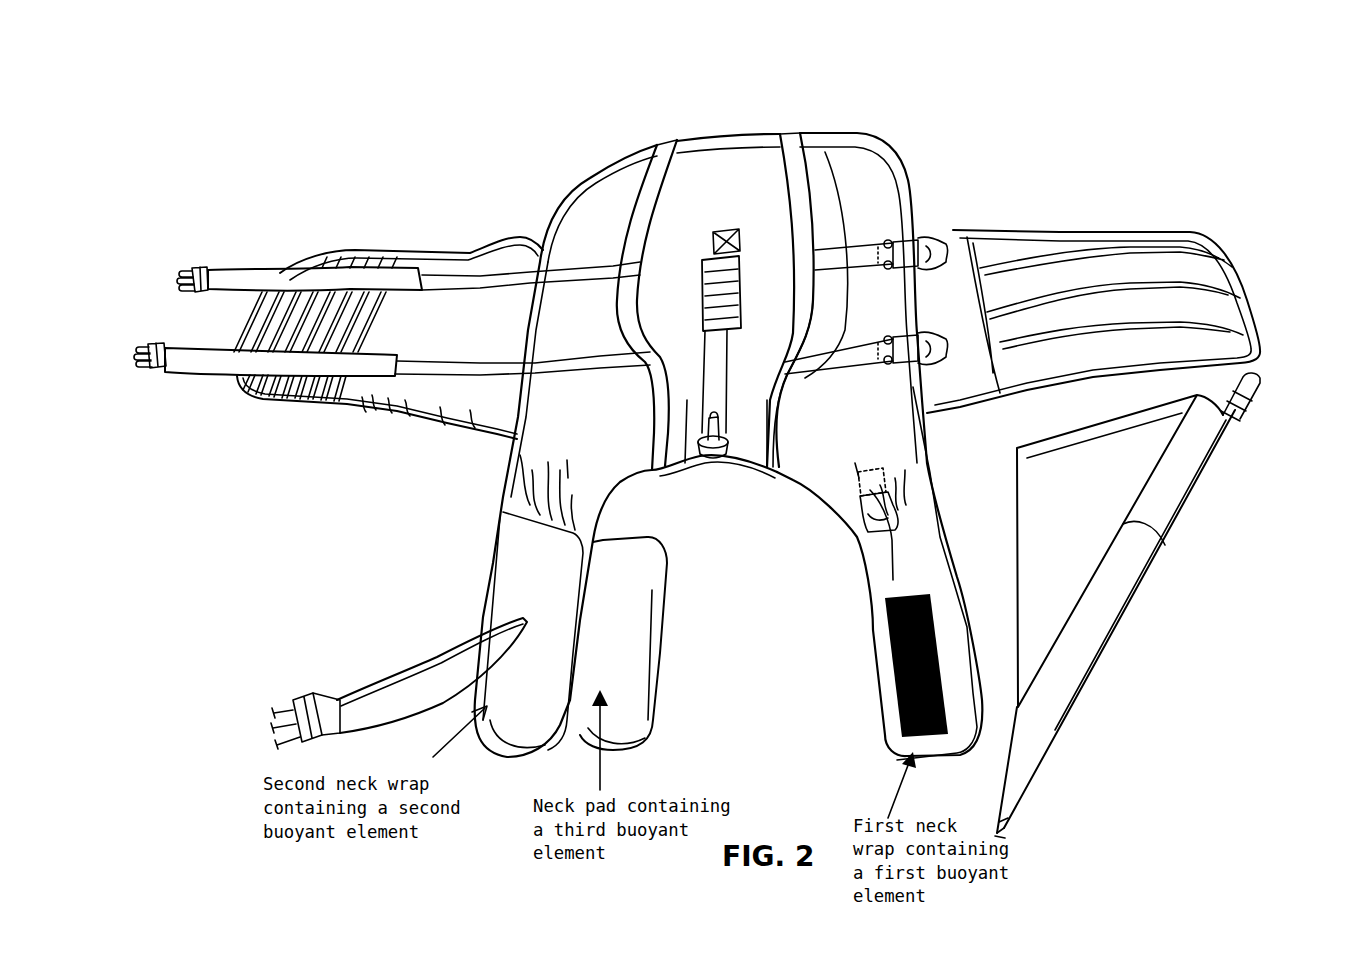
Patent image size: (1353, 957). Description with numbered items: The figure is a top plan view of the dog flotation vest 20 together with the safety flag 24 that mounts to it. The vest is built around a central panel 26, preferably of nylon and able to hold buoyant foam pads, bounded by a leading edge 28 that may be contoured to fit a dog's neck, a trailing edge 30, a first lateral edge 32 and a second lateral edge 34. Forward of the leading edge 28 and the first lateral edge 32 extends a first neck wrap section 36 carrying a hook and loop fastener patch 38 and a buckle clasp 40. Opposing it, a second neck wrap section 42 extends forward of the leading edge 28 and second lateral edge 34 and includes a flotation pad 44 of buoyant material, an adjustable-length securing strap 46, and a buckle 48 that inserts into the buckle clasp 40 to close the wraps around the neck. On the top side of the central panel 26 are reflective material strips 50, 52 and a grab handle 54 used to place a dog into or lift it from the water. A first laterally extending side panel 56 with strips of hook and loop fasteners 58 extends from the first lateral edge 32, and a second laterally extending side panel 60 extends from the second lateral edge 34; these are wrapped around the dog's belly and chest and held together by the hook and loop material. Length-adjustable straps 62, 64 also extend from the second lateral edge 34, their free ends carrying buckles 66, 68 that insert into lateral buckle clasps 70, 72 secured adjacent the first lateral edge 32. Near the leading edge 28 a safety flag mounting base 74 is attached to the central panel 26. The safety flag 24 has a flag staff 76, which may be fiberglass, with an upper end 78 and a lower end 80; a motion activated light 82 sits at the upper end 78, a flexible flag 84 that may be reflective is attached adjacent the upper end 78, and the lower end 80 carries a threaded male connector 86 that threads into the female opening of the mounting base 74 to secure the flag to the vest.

The dog flotation vest 20 is at (557, 120).
The safety flag 24 is at (1145, 582).
The central panel 26 is at (744, 201).
The leading edge 28 is at (738, 463).
The trailing edge 30 is at (722, 133).
The first lateral edge 32 is at (905, 192).
The second lateral edge 34 is at (558, 208).
The first neck wrap section 36 is at (962, 745).
The hook and loop fastener patch 38 is at (882, 672).
The buckle clasp 40 is at (872, 530).
The second neck wrap section 42 is at (537, 688).
The flotation pad 44 is at (624, 642).
The adjustable-length securing strap 46 is at (388, 690).
The buckle 48 is at (280, 706).
The reflective material strip 50 is at (794, 147).
The reflective material strip 52 is at (658, 193).
The grab handle 54 is at (704, 293).
The first laterally extending side panel 56 is at (1097, 232).
The hook and loop fasteners 58 is at (1175, 263).
The second laterally extending side panel 60 is at (346, 262).
The length-adjustable strap 62 is at (203, 366).
The length-adjustable strap 64 is at (260, 270).
The buckle 66 is at (140, 370).
The buckle 68 is at (188, 268).
The lateral buckle clasp 70 is at (933, 366).
The lateral buckle clasp 72 is at (938, 250).
The safety flag mounting base 74 is at (712, 448).
The flag staff 76 is at (1110, 645).
The upper end 78 is at (1249, 424).
The lower end 80 is at (1012, 828).
The motion activated light 82 is at (1258, 392).
The flexible flag 84 is at (1080, 512).
The threaded male connector 86 is at (1005, 832).